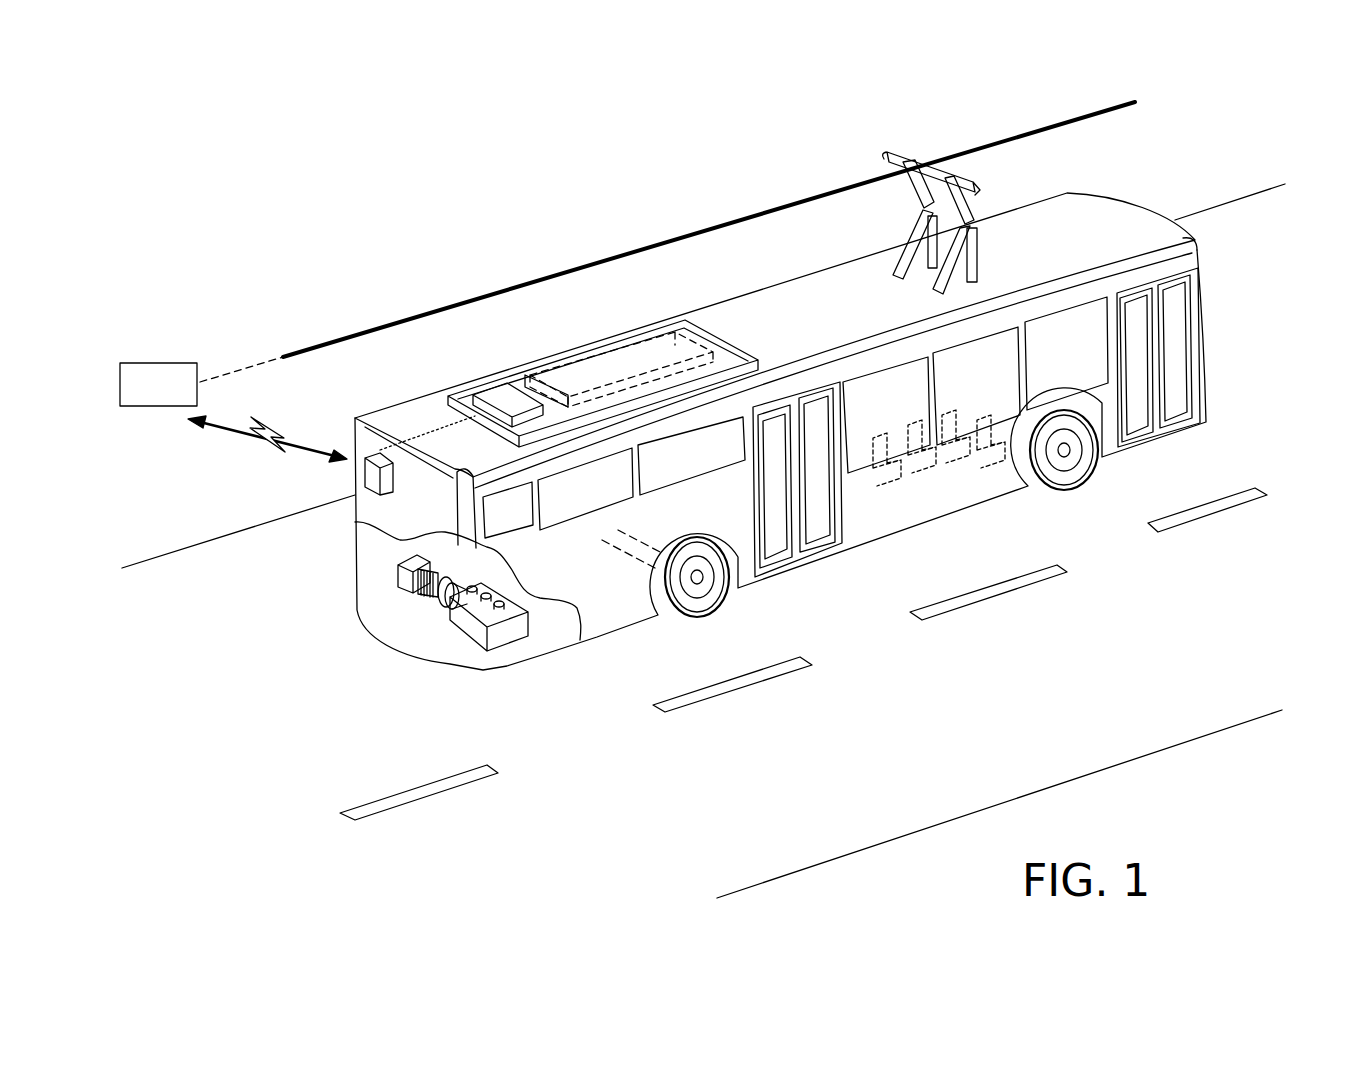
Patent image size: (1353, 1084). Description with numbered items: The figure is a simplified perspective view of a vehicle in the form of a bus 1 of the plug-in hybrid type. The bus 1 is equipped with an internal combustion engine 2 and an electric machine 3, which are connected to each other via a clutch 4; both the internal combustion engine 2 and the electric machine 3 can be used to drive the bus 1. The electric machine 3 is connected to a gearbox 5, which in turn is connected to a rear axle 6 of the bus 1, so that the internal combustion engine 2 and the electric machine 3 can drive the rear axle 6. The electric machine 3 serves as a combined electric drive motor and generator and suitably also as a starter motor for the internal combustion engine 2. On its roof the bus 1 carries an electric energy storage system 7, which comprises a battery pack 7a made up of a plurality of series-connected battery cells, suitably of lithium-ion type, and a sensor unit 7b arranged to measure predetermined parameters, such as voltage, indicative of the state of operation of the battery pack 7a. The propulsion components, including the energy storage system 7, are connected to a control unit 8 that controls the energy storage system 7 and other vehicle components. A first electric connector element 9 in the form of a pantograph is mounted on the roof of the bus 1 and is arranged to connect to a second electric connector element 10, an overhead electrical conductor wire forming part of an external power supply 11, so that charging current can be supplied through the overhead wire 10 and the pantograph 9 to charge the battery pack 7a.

The bus 1 is at (372, 366).
The internal combustion engine 2 is at (465, 630).
The electric machine 3 is at (420, 602).
The clutch 4 is at (440, 610).
The gearbox 5 is at (400, 580).
The rear axle 6 is at (628, 548).
The electric energy storage system 7 is at (543, 362).
The battery pack 7a is at (645, 357).
The sensor unit 7b is at (493, 387).
The control unit 8 is at (373, 475).
The first electric connector element 9 is at (907, 222).
The second electric connector element 10 is at (684, 233).
The external power supply 11 is at (233, 409).